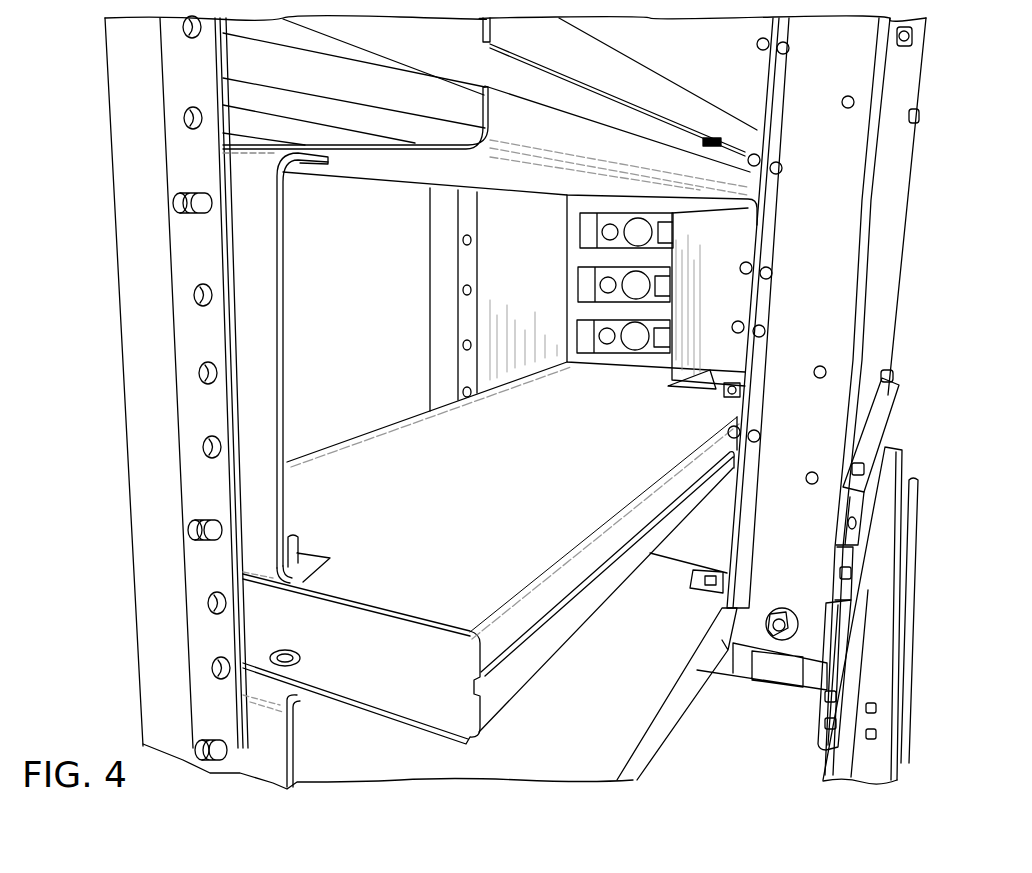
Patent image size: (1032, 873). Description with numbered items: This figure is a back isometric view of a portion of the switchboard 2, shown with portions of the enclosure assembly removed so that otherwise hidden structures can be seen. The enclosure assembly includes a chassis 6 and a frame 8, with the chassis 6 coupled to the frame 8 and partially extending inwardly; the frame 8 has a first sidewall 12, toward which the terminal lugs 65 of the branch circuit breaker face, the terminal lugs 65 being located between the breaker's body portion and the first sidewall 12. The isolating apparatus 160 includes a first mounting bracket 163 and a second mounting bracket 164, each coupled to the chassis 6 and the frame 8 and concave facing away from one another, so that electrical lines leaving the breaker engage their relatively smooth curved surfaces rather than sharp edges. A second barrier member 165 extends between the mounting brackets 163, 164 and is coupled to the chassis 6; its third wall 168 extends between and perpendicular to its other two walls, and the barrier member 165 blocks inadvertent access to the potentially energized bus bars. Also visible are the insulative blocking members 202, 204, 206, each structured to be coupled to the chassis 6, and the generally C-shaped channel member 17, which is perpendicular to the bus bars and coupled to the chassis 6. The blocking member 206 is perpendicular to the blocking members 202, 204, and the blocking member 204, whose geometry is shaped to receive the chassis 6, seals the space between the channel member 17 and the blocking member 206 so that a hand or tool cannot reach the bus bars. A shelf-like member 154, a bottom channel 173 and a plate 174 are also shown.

The switchboard 2 is at (935, 220).
The chassis 6 is at (850, 637).
The frame 8 is at (148, 489).
The first sidewall 12 is at (131, 318).
The channel member 17 is at (888, 414).
The terminal lugs 65 is at (630, 255).
The shelf 154 is at (655, 92).
The isolating apparatus 160 is at (403, 318).
The first mounting bracket 163 is at (400, 182).
The second mounting bracket 164 is at (462, 455).
The second barrier member 165 is at (714, 343).
The third wall 168 is at (722, 245).
The bottom support channel 173 is at (540, 650).
The support plate 174 is at (660, 730).
The insulative blocking member 202 is at (880, 298).
The insulative blocking member 204 is at (853, 553).
The insulative blocking member 206 is at (733, 667).